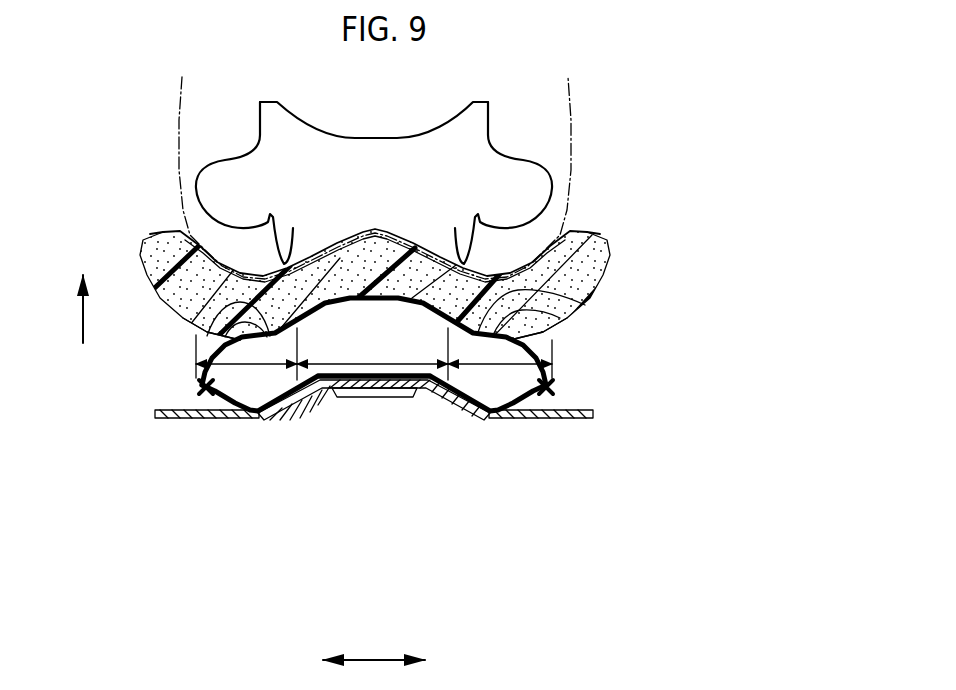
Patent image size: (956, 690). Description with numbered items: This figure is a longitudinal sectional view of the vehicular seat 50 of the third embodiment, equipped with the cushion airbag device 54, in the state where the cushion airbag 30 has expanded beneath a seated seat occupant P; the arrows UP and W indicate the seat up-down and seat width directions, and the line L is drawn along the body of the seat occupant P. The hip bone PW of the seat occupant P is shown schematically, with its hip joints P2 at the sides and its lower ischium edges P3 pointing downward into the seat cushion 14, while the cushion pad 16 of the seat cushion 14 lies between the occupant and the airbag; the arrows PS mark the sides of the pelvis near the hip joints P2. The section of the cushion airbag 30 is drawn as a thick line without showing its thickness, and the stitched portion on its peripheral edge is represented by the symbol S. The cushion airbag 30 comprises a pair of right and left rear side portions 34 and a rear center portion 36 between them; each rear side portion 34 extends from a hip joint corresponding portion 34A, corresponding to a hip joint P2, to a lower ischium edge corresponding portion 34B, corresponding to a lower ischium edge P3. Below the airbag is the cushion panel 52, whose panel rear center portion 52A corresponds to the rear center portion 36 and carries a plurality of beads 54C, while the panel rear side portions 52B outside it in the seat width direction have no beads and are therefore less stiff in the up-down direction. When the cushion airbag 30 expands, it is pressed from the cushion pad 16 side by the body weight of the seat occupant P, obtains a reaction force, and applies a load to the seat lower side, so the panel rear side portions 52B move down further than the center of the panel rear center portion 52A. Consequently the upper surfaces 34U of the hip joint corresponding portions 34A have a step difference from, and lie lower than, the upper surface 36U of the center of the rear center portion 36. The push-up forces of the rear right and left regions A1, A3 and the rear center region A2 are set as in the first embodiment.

The seat cushion 14 is at (647, 233).
The cushion pad 16 is at (597, 257).
The cushion airbag 30 is at (533, 356).
The rear side portions 34 is at (259, 416).
The hip joint corresponding portions 34A is at (213, 321).
The lower ischium edge corresponding portions 34B is at (297, 400).
The upper surfaces of the hip joint corresponding portions 34U is at (207, 340).
The rear center portion 36 is at (357, 382).
The upper surface of the rear center portion 36U is at (360, 296).
The vehicular seat 50 is at (626, 450).
The cushion panel 52 is at (440, 395).
The panel rear center portion 52A is at (377, 398).
The panel rear side portions 52B is at (272, 418).
The cushion airbag device 54 is at (604, 387).
The beads 54C is at (343, 398).
The seat occupant P is at (568, 113).
The hip bone PW is at (425, 133).
The body line L is at (573, 160).
The hip joints P2 is at (218, 187).
The lower ischium edges P3 is at (283, 262).
The pelvis support direction PS is at (266, 258).
The stitched portion S is at (206, 389).
The rear left region A1 is at (246, 363).
The rear center region A2 is at (376, 360).
The rear right region A3 is at (500, 369).
The upward direction UP is at (82, 293).
The width direction W is at (377, 656).